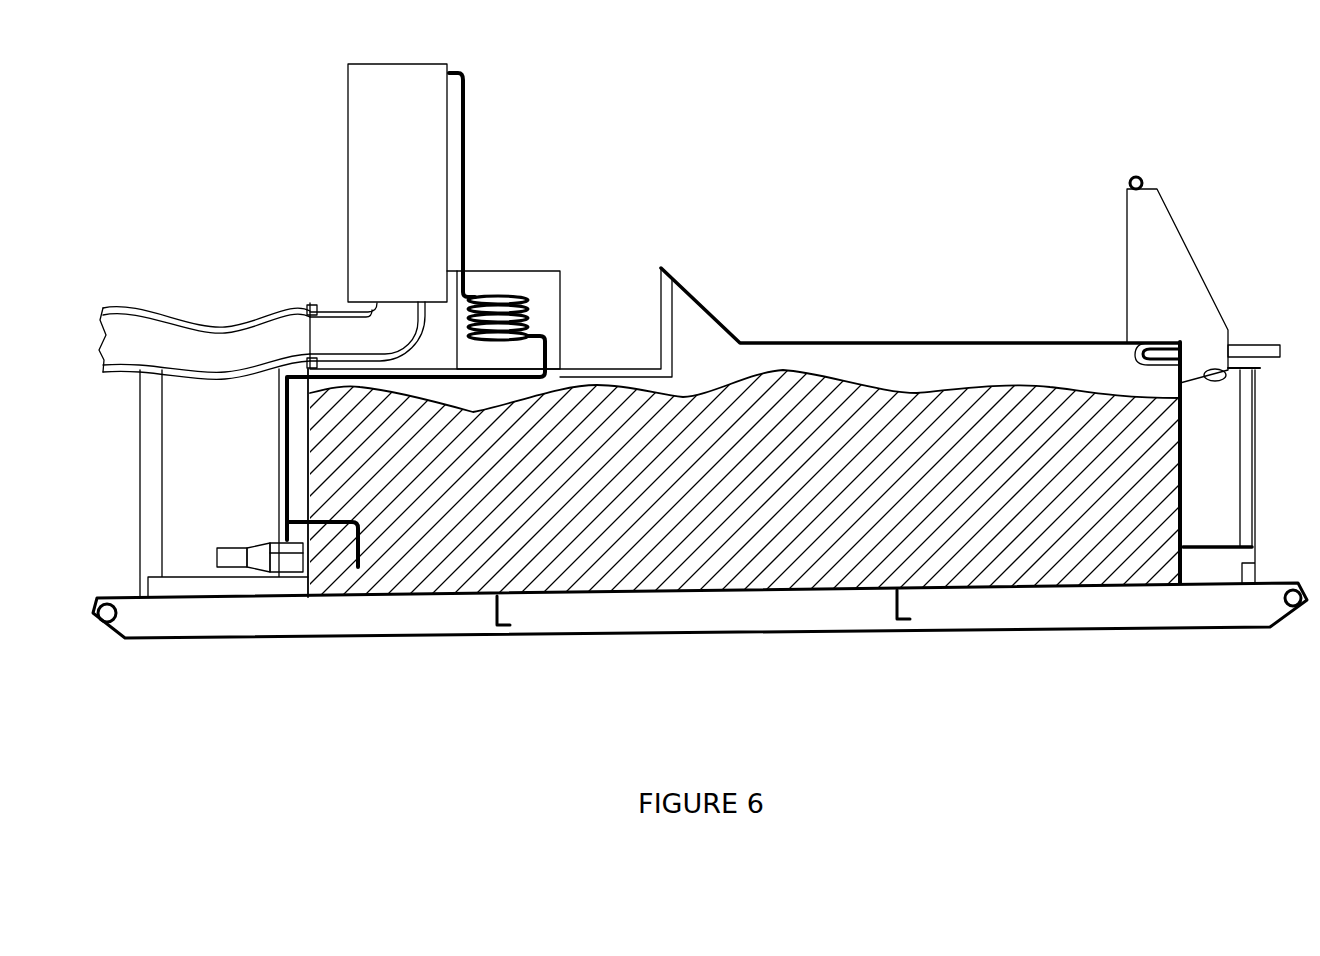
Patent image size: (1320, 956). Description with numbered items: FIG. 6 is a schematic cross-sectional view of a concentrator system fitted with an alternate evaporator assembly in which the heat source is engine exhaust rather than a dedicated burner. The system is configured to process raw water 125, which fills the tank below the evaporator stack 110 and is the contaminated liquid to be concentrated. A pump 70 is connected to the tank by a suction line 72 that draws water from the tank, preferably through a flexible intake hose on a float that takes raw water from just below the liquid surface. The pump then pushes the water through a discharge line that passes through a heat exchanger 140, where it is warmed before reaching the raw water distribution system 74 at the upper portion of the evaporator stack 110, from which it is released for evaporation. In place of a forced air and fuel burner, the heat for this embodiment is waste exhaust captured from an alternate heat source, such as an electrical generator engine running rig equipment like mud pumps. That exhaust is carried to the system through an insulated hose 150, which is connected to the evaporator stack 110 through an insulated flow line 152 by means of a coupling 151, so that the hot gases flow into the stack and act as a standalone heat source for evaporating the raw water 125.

The pump 70 is at (235, 547).
The suction line 72 is at (342, 557).
The raw water distribution system 74 is at (465, 187).
The evaporator stack 110 is at (397, 163).
The raw water 125 is at (860, 383).
The heat exchanger 140 is at (503, 283).
The insulated hose 150 is at (177, 308).
The coupling 151 is at (305, 305).
The insulated flow line 152 is at (348, 306).